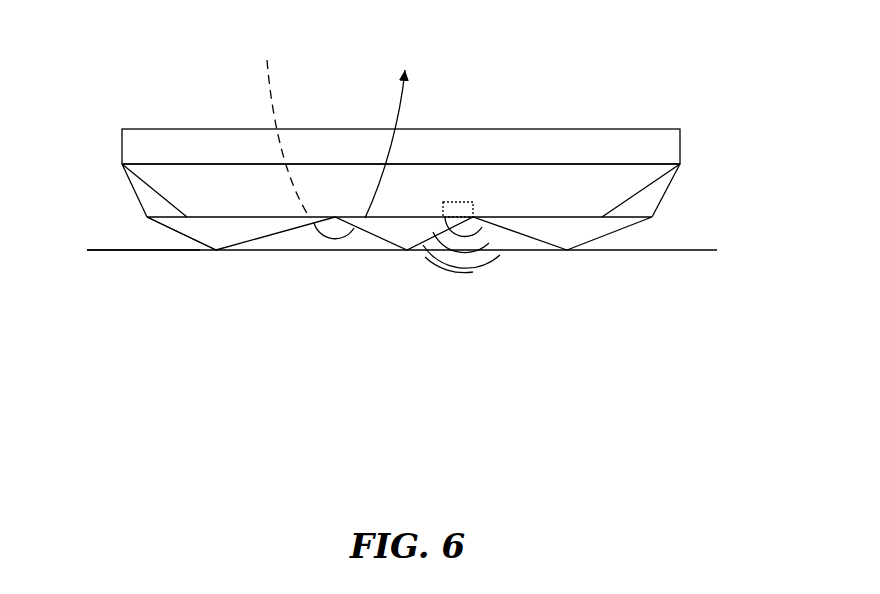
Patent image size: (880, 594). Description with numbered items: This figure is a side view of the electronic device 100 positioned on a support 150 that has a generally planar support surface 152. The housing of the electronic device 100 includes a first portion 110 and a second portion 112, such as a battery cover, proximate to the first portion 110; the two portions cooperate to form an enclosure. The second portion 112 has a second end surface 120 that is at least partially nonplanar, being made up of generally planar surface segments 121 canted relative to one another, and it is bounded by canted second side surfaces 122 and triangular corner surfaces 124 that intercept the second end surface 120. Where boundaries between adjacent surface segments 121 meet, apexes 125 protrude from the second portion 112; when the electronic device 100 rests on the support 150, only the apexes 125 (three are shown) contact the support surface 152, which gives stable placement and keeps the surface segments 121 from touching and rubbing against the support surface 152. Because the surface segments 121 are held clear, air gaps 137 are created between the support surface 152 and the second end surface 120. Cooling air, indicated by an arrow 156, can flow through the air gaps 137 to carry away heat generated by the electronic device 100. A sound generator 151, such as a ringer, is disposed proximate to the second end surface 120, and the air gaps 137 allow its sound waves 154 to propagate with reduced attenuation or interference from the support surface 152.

The electronic device 100 is at (703, 118).
The first portion 110 is at (540, 110).
The second portion 112 is at (680, 213).
The second end surface 120 is at (590, 228).
The surface segments 121 is at (165, 228).
The second side surfaces 122 is at (622, 183).
The corner surfaces 124 is at (148, 200).
The apexes 125 is at (213, 252).
The air gaps 137 is at (333, 243).
The support 150 is at (122, 322).
The sound generator 151 is at (473, 202).
The support surface 152 is at (113, 252).
The sound waves 154 is at (468, 268).
The arrow 156 is at (345, 127).